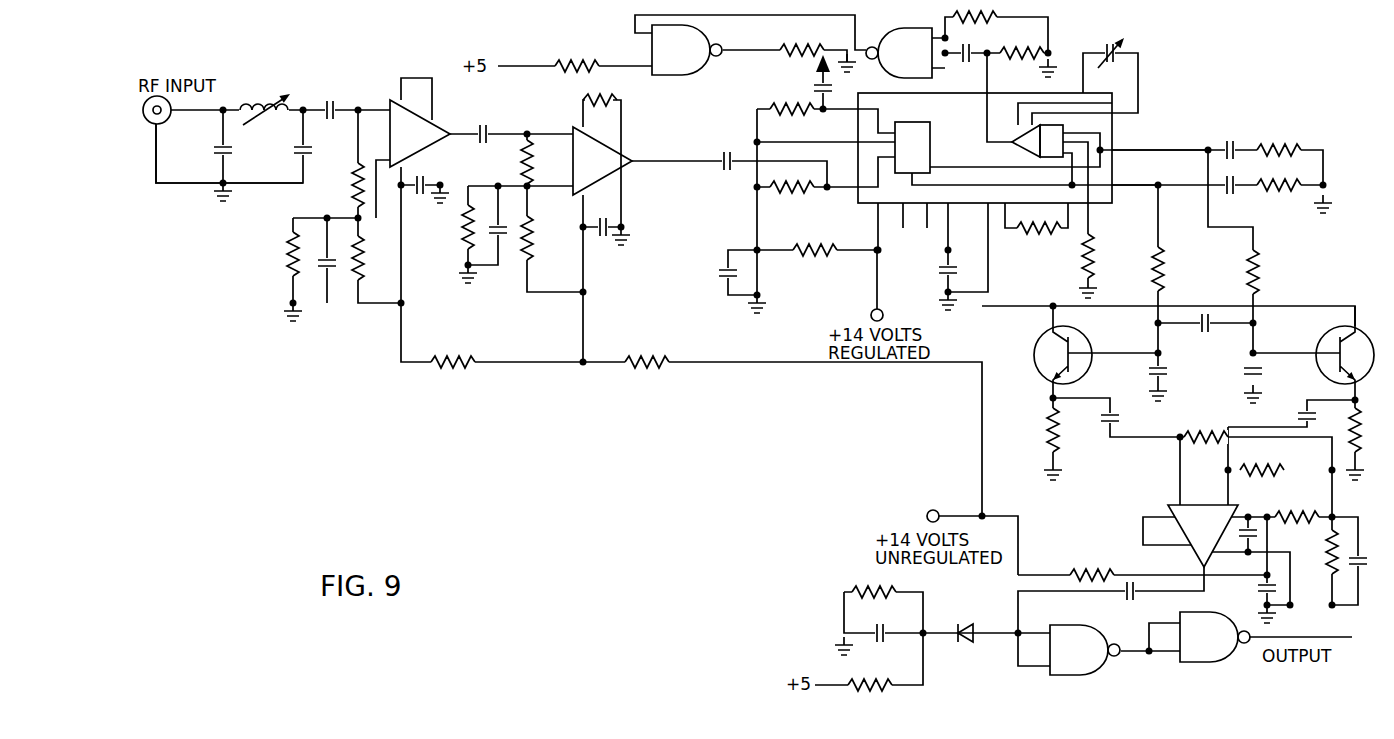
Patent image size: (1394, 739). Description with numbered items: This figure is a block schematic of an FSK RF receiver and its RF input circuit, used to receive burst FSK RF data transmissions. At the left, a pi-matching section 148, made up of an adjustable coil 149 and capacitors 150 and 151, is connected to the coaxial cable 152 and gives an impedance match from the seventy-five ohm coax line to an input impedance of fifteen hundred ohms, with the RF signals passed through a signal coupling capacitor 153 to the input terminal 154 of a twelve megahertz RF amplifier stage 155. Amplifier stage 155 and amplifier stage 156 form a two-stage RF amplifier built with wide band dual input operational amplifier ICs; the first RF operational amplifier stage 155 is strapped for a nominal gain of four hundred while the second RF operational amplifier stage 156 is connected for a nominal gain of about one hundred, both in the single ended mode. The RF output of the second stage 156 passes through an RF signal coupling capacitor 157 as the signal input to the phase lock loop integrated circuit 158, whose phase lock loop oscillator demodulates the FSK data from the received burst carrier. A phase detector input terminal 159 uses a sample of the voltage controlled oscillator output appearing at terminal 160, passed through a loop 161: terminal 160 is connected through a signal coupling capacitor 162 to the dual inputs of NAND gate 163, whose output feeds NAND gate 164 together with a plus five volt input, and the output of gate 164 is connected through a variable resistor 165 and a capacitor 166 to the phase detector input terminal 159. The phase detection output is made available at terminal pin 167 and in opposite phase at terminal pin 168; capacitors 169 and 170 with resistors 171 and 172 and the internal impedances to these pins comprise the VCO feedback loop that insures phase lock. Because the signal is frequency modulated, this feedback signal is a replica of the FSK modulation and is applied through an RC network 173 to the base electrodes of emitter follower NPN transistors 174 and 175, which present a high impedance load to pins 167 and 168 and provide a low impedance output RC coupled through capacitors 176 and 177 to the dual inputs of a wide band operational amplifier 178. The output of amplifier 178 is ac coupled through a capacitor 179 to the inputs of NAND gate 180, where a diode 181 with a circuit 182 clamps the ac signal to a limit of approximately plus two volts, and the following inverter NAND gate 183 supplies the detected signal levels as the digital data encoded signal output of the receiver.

The pi-matching section 148 is at (258, 60).
The adjustable coil 149 is at (252, 116).
The capacitor 150 is at (218, 152).
The capacitor 151 is at (299, 152).
The coaxial cable 152 is at (168, 119).
The signal coupling capacitor 153 is at (331, 98).
The input terminal 154 is at (392, 100).
The RF amplifier stage 155 is at (449, 130).
The amplifier stage 156 is at (634, 158).
The RF signal coupling capacitor 157 is at (723, 167).
The XR-210 integrated circuit 158 is at (857, 200).
The phase detector input terminal 159 is at (857, 110).
The terminal 160 is at (988, 98).
The loop 161 is at (1061, 22).
The signal coupling capacitor 162 is at (971, 50).
The NAND gate 163 is at (922, 80).
The NAND gate 164 is at (702, 30).
The variable resistor 165 is at (805, 46).
The capacitor 166 is at (820, 92).
The terminal pin 167 is at (1115, 186).
The terminal pin 168 is at (1115, 152).
The capacitor 169 is at (1235, 195).
The capacitor 170 is at (1226, 145).
The resistor 171 is at (1278, 192).
The resistor 172 is at (1264, 143).
The RC network 173 is at (1272, 272).
The emitter follower NPN transistor 174 is at (1080, 337).
The emitter follower NPN transistor 175 is at (1326, 341).
The capacitor 176 is at (1116, 424).
The capacitor 177 is at (1301, 418).
The wide band operational amplifier 178 is at (1235, 508).
The capacitor 179 is at (1134, 598).
The NAND gate 180 is at (1081, 633).
The diode 181 is at (963, 632).
The circuit 182 is at (927, 590).
The inverter NAND gate 183 is at (1208, 616).